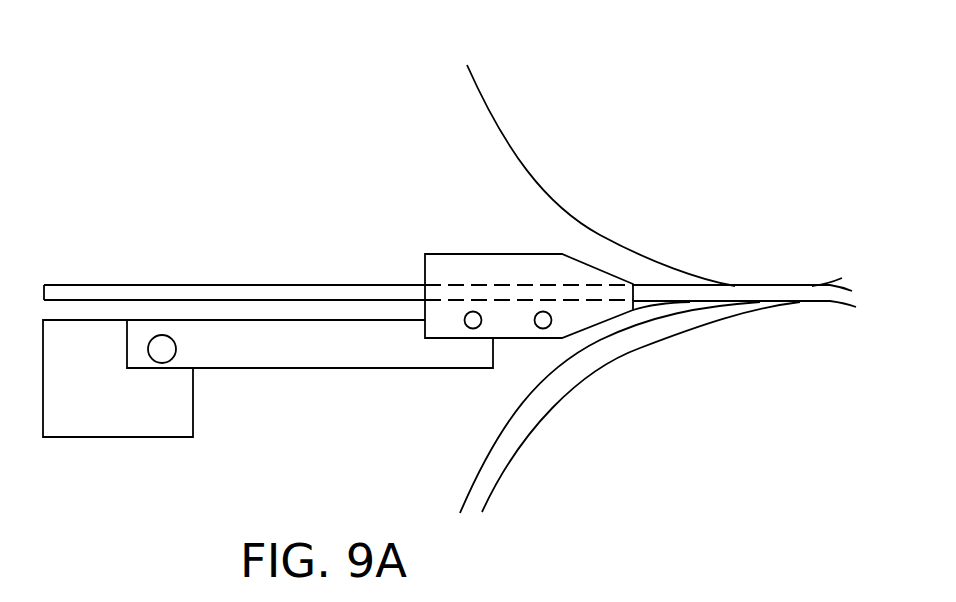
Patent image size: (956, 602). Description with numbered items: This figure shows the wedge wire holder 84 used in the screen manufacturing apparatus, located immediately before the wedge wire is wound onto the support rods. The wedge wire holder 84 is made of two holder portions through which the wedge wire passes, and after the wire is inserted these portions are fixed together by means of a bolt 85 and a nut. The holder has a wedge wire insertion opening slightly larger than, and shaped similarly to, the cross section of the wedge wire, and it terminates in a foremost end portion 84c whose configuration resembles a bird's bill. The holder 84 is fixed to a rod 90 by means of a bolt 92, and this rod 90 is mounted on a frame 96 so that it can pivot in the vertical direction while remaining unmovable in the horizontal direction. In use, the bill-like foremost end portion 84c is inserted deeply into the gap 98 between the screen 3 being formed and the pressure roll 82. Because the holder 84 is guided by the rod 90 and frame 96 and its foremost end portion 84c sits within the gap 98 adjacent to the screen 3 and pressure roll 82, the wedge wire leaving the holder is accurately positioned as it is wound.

The pressure roll 82 is at (535, 97).
The wedge wire holder 84 is at (443, 268).
The foremost end portion 84c is at (572, 273).
The bolt 85 is at (542, 327).
The rod 90 is at (302, 352).
The bolt 92 is at (472, 323).
The frame 96 is at (118, 422).
The gap 98 is at (537, 232).
The screen 3 is at (570, 420).